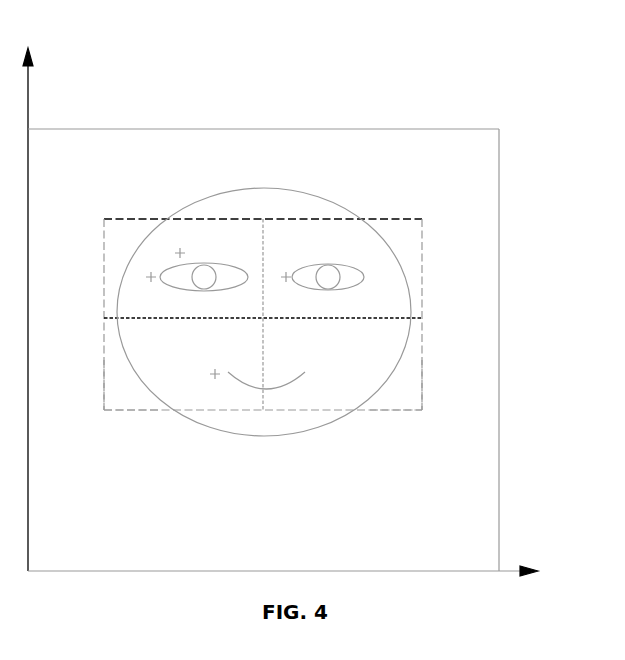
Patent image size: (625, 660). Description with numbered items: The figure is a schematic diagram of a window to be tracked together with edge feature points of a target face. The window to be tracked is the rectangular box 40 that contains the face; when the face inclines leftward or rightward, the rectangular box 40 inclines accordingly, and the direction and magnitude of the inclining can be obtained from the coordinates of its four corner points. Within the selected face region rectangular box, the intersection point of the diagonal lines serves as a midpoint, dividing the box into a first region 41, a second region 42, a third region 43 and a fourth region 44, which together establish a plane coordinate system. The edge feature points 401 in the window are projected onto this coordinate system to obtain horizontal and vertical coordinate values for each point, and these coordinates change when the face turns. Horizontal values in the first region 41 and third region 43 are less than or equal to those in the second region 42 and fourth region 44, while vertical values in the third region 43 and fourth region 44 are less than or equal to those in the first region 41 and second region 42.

The rectangular box 40 is at (438, 316).
The first region 41 is at (123, 217).
The second region 42 is at (388, 251).
The edge feature point 401 is at (190, 231).
The third region 43 is at (132, 405).
The fourth region 44 is at (409, 404).